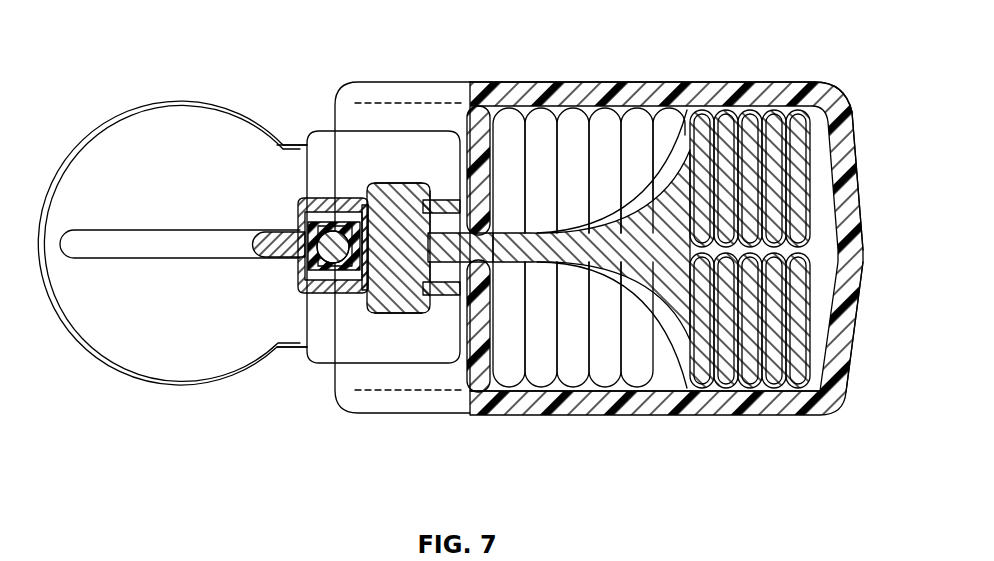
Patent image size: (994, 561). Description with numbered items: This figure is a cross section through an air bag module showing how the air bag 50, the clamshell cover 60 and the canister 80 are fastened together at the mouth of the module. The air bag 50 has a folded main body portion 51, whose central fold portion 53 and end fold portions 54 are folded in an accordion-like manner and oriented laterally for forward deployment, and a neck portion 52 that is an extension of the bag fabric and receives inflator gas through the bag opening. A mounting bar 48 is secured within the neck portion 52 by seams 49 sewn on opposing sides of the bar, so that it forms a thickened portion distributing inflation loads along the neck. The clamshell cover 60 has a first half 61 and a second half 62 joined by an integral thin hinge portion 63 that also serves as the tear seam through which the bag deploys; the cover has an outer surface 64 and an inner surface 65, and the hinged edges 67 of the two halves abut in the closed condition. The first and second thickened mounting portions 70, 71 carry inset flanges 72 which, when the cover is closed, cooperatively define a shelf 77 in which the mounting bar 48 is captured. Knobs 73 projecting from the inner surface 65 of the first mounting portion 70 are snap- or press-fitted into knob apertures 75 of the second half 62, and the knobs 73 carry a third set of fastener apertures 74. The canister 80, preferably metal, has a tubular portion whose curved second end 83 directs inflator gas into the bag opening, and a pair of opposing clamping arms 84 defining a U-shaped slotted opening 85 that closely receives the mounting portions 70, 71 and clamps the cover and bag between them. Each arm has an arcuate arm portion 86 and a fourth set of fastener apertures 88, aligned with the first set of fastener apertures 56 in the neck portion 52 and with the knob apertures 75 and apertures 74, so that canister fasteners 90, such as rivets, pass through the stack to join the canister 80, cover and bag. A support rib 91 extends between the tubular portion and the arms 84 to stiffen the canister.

The mounting bar 48 is at (316, 194).
The seams 49 is at (333, 264).
The air bag 50 is at (806, 120).
The main body portion 51 is at (765, 108).
The neck portion 52 is at (510, 232).
The central fold portion 53 is at (729, 108).
The end fold portions 54 is at (568, 122).
The first set of fastener apertures 56 is at (412, 212).
The clamshell cover 60 is at (616, 80).
The first half 61 is at (787, 419).
The second half 62 is at (795, 80).
The hinge portion 63 is at (860, 262).
The outer surface 64 is at (696, 82).
The inner surface 65 is at (663, 82).
The hinged edges 67 is at (860, 252).
The first thickened mounting portion 70 is at (444, 298).
The second thickened mounting portion 71 is at (451, 208).
The inset flanges 72 is at (300, 203).
The knobs 73 is at (364, 220).
The third set of fastener apertures 74 is at (392, 202).
The knob apertures 75 is at (427, 193).
The shelf 77 is at (316, 238).
The canister 80 is at (144, 100).
The curved second end 83 is at (107, 315).
The clamping arms 84 is at (304, 146).
The U-shaped slotted opening 85 is at (413, 291).
The arcuate arm portion 86 is at (330, 138).
The fourth set of fastener apertures 88 is at (421, 274).
The canister fasteners 90 is at (393, 199).
The support rib 91 is at (155, 258).